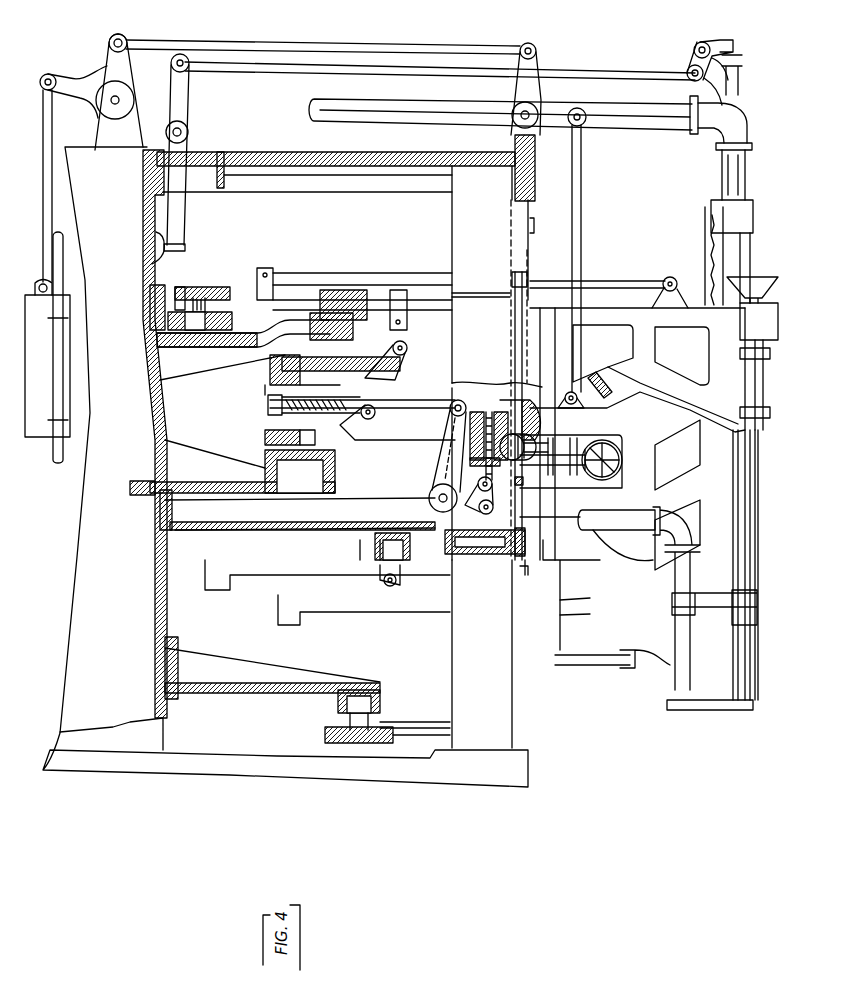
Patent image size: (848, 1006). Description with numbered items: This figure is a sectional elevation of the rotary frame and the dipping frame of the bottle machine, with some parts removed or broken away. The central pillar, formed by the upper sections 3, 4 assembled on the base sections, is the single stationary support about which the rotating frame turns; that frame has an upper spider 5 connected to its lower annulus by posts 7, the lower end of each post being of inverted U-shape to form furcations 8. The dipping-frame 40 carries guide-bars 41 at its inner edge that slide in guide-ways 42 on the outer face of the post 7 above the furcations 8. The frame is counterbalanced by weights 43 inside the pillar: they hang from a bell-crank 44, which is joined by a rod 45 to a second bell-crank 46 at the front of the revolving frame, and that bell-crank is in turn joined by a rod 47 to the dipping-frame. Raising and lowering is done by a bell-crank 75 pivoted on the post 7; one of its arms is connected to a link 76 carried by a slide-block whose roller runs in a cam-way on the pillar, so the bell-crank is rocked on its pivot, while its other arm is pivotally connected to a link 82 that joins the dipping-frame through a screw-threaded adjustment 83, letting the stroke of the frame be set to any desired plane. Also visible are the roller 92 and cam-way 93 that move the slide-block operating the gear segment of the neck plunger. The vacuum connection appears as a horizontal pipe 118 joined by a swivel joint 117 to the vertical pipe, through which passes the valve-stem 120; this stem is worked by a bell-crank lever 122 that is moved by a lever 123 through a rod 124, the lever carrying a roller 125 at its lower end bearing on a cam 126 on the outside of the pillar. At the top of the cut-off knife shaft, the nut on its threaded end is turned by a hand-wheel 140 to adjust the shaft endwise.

The upper pillar section 3 is at (155, 571).
The upper pillar section 4 is at (146, 313).
The upper spider 5 is at (413, 166).
The post 7 is at (462, 228).
The furcation 8 is at (505, 693).
The dipping-frame 40 is at (632, 483).
The guide-bar 41 is at (512, 504).
The guide-way 42 is at (523, 546).
The counterbalance weight 43 is at (67, 362).
The bell-crank 44 is at (130, 65).
The rod 45 is at (426, 47).
The bell-crank 46 is at (545, 61).
The rod 47 is at (582, 223).
The bell-crank 75 is at (403, 456).
The link 76 is at (268, 405).
The link 82 is at (480, 508).
The screw-threaded adjustment 83 is at (480, 415).
The roller 92 is at (276, 360).
The cam-way 93 is at (337, 358).
The swivel joint 117 is at (733, 113).
The horizontal pipe 118 is at (646, 126).
The valve-stem 120 is at (744, 60).
The bell-crank lever 122 is at (729, 46).
The lever 123 is at (186, 103).
The rod 124 is at (292, 64).
The roller 125 is at (188, 248).
The cam 126 is at (168, 255).
The hand-wheel 140 is at (779, 274).